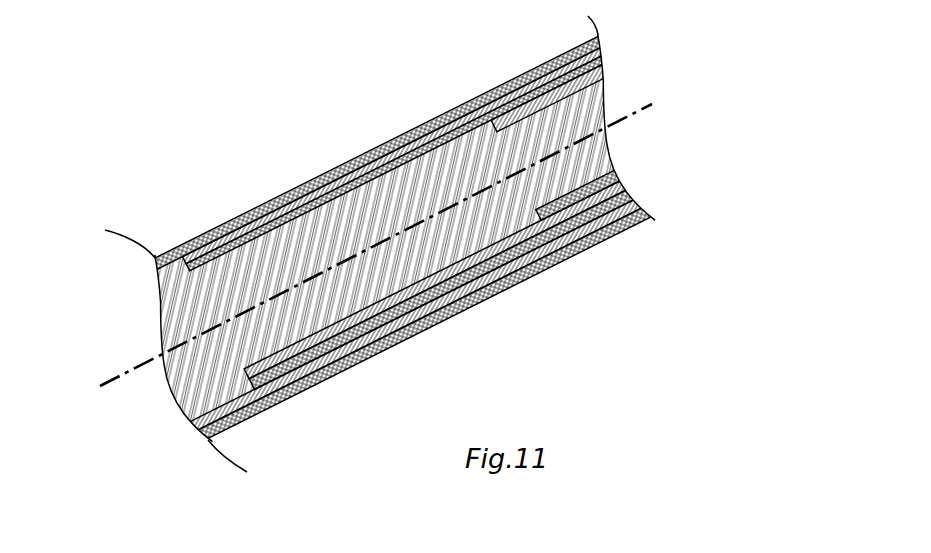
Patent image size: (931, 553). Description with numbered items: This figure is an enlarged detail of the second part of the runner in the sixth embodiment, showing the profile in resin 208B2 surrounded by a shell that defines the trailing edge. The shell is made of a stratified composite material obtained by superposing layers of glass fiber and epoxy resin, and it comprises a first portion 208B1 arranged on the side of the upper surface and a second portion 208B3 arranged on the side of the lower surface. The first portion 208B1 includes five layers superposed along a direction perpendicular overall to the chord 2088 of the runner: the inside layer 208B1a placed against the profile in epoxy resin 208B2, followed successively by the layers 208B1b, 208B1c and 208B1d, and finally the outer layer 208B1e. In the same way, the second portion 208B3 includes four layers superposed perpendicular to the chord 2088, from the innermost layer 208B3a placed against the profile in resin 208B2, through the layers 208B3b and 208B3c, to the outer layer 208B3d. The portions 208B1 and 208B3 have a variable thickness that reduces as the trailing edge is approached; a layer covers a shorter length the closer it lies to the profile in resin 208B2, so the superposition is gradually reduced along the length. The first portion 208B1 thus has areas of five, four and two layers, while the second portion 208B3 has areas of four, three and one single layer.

The chord 2088 is at (152, 358).
The first portion of the shell 208B1 is at (781, 204).
The inside layer of the first portion 208B1a is at (608, 189).
The second layer of the first portion 208B1b is at (624, 200).
The third layer of the first portion 208B1c is at (628, 210).
The fourth layer of the first portion 208B1d is at (623, 208).
The outer layer of the first portion 208B1e is at (596, 236).
The profile in resin 208B2 is at (197, 375).
The second portion of the shell 208B3 is at (122, 47).
The innermost layer of the second portion 208B3a is at (495, 133).
The second layer of the second portion 208B3b is at (465, 130).
The third layer of the second portion 208B3c is at (430, 138).
The outer layer of the second portion 208B3d is at (308, 187).